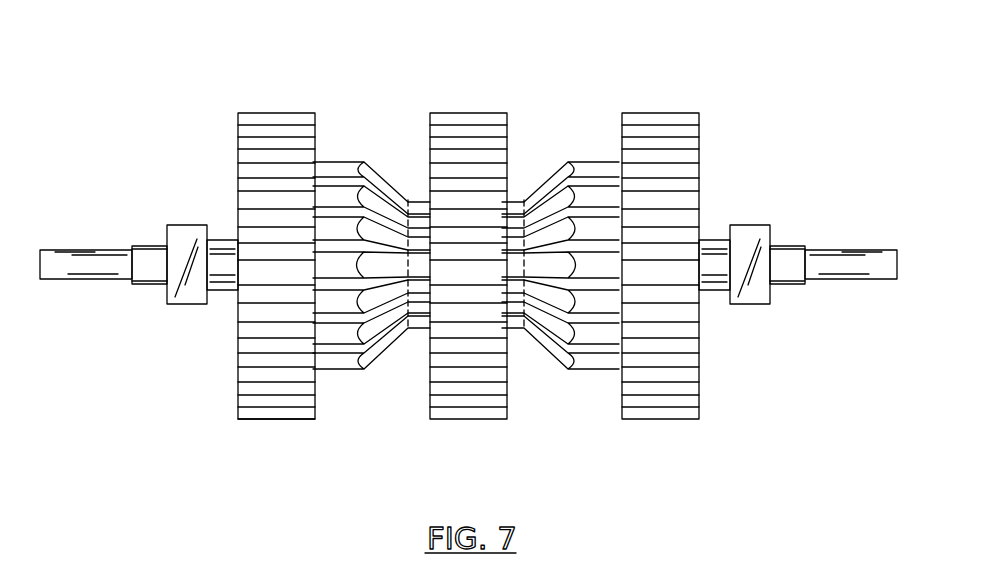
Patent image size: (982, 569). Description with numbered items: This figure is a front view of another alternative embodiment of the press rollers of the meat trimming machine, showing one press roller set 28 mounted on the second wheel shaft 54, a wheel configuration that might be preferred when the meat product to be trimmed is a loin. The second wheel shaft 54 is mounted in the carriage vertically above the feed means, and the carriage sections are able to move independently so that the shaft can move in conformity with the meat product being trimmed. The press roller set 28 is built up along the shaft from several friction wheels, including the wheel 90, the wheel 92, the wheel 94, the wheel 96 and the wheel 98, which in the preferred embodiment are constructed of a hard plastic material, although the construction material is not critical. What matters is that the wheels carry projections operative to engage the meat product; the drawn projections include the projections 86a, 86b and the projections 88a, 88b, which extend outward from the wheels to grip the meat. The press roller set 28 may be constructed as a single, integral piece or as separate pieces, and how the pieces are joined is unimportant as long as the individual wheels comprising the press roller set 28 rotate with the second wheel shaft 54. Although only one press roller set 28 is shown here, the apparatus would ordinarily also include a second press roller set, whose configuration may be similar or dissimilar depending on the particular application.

The press roller set 28 is at (358, 61).
The second wheel shaft 54 is at (56, 250).
The projection 88a is at (273, 125).
The projection 88b is at (252, 135).
The wheel 94 is at (340, 156).
The wheel 98 is at (476, 106).
The wheel 90 is at (660, 104).
The wheel 96 is at (270, 427).
The projection 86a is at (375, 356).
The projection 86b is at (334, 340).
The wheel 92 is at (586, 383).